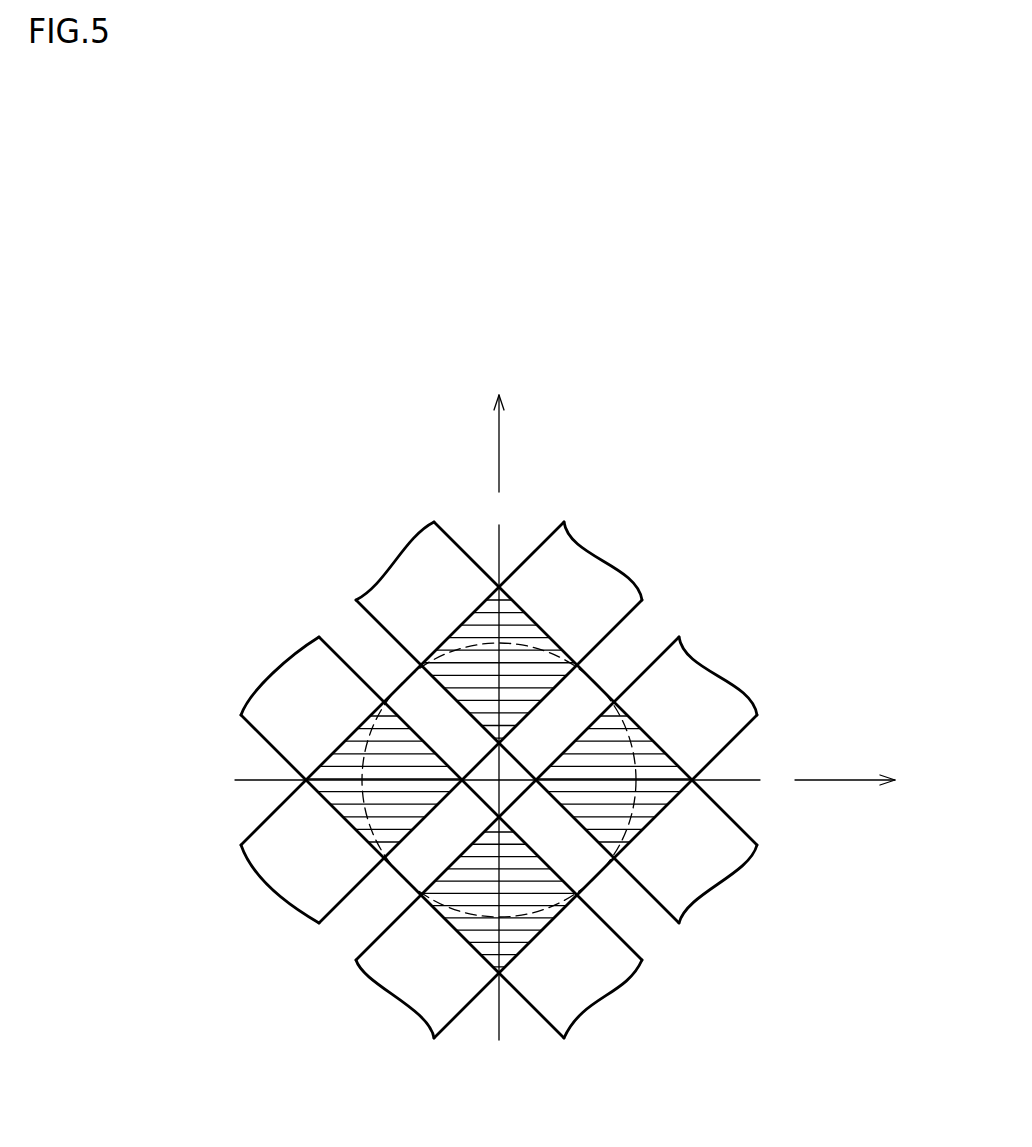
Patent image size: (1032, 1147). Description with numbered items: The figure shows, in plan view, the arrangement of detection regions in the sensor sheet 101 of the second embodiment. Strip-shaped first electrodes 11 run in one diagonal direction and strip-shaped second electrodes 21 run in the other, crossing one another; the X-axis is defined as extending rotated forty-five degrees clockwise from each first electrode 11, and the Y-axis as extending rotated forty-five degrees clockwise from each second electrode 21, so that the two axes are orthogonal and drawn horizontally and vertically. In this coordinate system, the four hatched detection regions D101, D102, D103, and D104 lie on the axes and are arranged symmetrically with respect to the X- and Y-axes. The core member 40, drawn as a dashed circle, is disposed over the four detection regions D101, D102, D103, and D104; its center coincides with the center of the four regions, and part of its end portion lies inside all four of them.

The sensor sheet 101 is at (553, 718).
The first electrode 11 is at (642, 600).
The second electrode 21 is at (687, 873).
The core member 40 is at (478, 647).
The detection region D101 is at (650, 793).
The detection region D102 is at (507, 642).
The detection region D103 is at (347, 767).
The detection region D104 is at (487, 928).